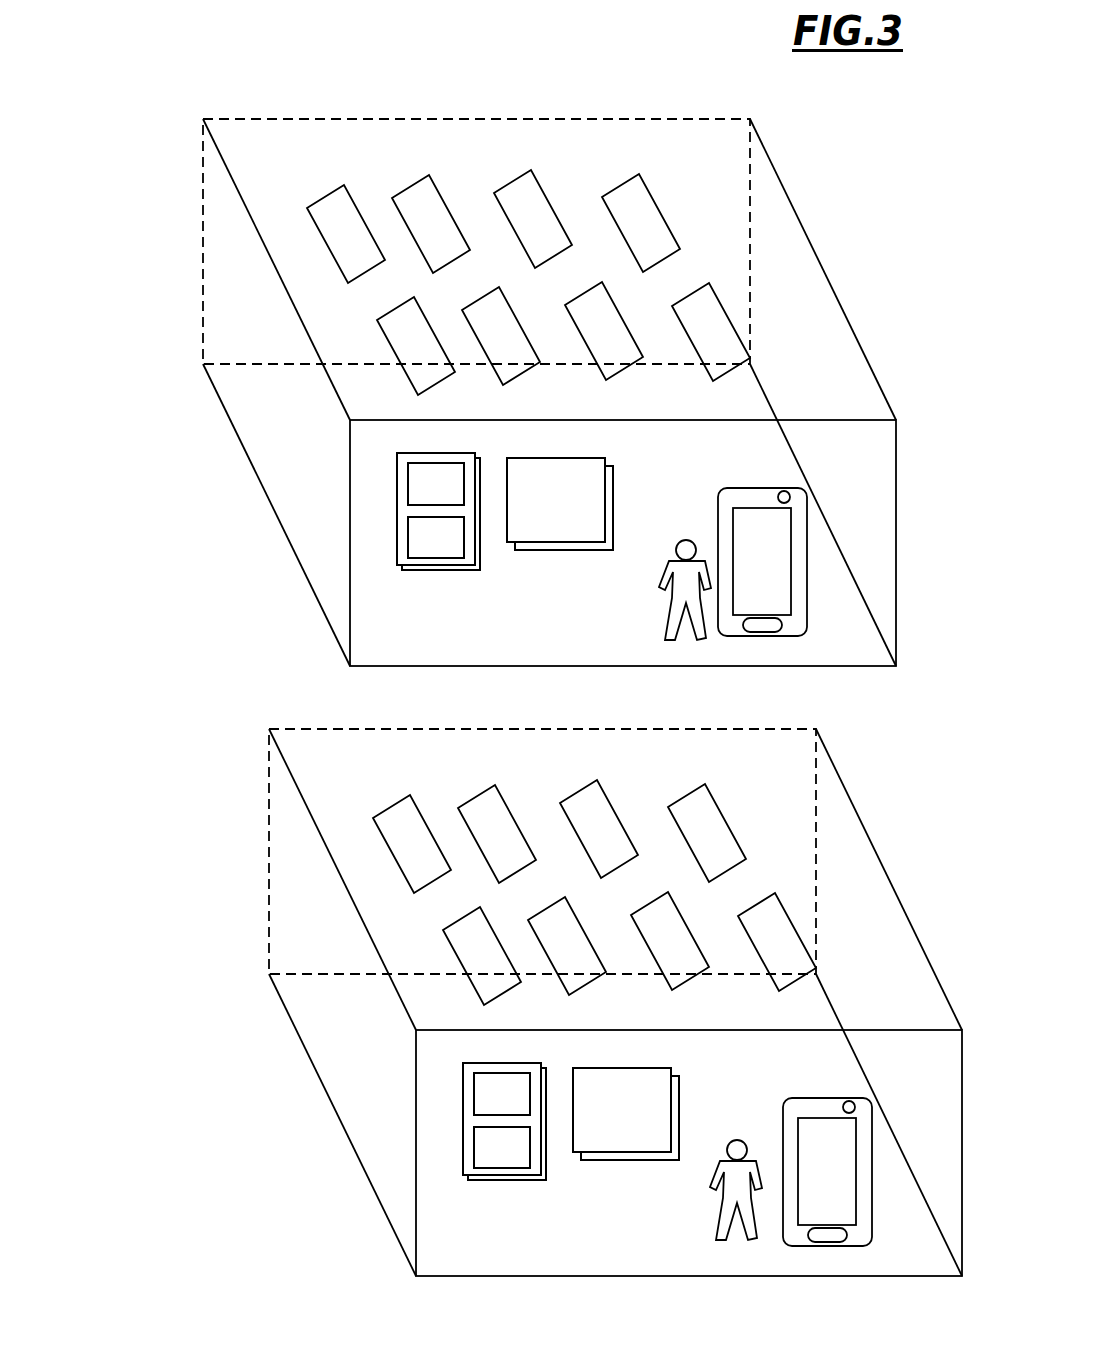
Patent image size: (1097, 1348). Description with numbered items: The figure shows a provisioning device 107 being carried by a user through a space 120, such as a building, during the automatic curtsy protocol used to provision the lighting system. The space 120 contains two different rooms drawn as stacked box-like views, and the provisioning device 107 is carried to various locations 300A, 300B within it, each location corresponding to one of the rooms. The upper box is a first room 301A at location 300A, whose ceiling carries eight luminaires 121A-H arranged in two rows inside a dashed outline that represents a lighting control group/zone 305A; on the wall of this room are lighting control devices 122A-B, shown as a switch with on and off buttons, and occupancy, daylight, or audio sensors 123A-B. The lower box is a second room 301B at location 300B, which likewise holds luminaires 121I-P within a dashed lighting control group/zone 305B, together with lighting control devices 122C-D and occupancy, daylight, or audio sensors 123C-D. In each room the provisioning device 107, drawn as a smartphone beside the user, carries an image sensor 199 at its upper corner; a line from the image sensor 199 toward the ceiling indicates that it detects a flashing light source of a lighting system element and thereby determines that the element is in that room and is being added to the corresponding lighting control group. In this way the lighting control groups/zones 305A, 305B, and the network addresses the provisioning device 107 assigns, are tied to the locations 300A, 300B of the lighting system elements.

The space 120 is at (492, 82).
The location 300A is at (469, 392).
The first room 301A is at (203, 207).
The luminaires 121A-H is at (343, 185).
The lighting control group/zone 305A is at (476, 256).
The lighting control devices 122A-B is at (449, 541).
The occupancy, daylight, or audio sensors 123A-B is at (560, 504).
The provisioning device 107 is at (783, 1110).
The image sensor 199 is at (947, 1100).
The location 300B is at (535, 1001).
The second room 301B is at (268, 815).
The luminaires 121I-P is at (410, 795).
The lighting control group/zone 305B is at (542, 867).
The lighting control devices 122C-D is at (515, 1151).
The occupancy, daylight, or audio sensors 123C-D is at (626, 1114).